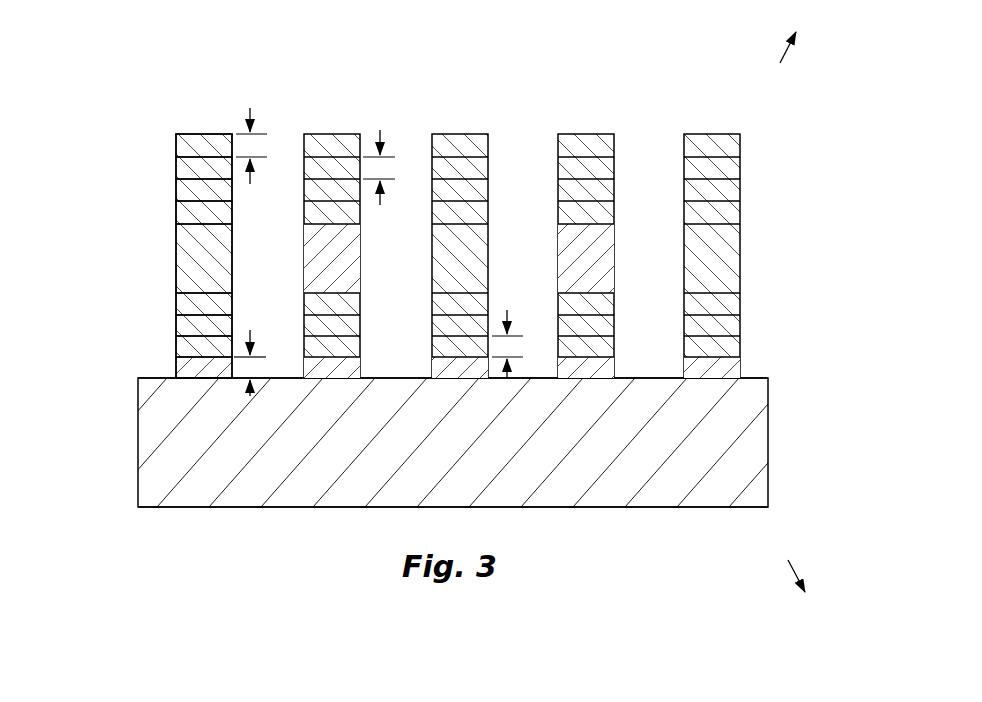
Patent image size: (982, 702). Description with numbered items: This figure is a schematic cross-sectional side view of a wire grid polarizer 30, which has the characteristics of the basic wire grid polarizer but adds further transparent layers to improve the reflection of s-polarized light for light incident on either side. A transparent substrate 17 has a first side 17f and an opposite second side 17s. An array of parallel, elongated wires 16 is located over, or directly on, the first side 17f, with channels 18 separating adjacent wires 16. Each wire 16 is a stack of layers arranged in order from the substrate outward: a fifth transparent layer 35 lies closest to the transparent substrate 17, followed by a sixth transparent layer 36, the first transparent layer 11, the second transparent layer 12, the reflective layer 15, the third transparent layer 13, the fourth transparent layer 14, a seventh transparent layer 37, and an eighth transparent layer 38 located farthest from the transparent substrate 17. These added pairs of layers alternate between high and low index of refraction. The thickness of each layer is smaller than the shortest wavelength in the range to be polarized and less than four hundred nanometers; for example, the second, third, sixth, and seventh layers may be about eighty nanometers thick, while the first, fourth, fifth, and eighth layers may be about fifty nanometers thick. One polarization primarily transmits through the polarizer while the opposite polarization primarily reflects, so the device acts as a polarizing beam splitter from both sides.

The wire grid polarizer 30 is at (72, 466).
The wires 16 is at (203, 121).
The transparent substrate 17 is at (450, 452).
The first side 17f is at (750, 375).
The second side 17s is at (746, 508).
The channels 18 is at (458, 257).
The eighth transparent layer 38 is at (164, 148).
The seventh transparent layer 37 is at (164, 169).
The fourth transparent layer 14 is at (164, 192).
The third transparent layer 13 is at (164, 213).
The reflective layer 15 is at (164, 253).
The second transparent layer 12 is at (164, 302).
The first transparent layer 11 is at (164, 323).
The sixth transparent layer 36 is at (164, 348).
The fifth transparent layer 35 is at (164, 368).